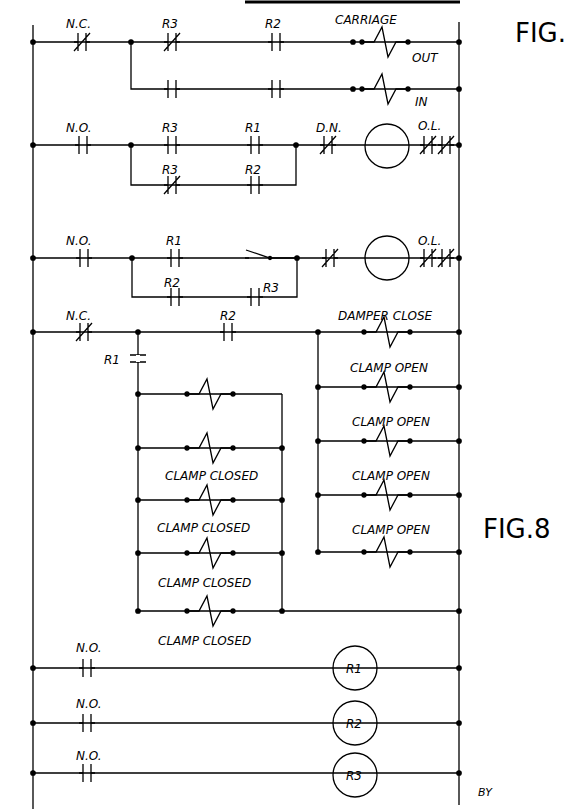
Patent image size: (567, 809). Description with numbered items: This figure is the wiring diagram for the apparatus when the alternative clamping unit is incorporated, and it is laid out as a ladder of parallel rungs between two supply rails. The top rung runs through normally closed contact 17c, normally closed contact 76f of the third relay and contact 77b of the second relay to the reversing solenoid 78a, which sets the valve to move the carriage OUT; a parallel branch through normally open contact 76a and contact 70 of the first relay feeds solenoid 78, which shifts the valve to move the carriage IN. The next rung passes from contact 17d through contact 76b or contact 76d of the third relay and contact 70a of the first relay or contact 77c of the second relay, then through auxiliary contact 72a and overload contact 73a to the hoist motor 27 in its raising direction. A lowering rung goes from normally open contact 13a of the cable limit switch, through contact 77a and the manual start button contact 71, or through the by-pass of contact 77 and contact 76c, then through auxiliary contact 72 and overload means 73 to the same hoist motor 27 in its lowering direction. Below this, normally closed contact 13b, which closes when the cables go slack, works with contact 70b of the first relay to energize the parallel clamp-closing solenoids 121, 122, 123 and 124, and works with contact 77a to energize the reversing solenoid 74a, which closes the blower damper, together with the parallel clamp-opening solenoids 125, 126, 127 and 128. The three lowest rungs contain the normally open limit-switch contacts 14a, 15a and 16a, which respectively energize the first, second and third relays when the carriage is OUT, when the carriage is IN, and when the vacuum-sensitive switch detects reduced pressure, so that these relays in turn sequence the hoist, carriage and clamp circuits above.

The normally closed contact 17c is at (82, 55).
The normally closed contact 76f is at (173, 55).
The contact 77b is at (276, 55).
The reversing solenoid 78a is at (385, 52).
The normally open contact 76a is at (173, 98).
The contact 70 is at (233, 247).
The solenoid 78 is at (385, 91).
The contact 17d is at (83, 151).
The normally closed contact 76b is at (186, 148).
The contact 76d is at (187, 190).
The contact 70a is at (268, 149).
The contact 77c is at (254, 193).
The auxiliary contact 72a is at (328, 155).
The hoist motor 27 is at (392, 233).
The auxiliary contact 73a is at (436, 156).
The normally open contact 13a is at (80, 270).
The contact 77a is at (206, 306).
The manually operated start button contact 71 is at (271, 247).
The contact 77 is at (173, 305).
The contact 76c is at (264, 306).
The auxiliary contact 72 is at (328, 269).
The overload means 73 is at (437, 270).
The normally closed contact 13b is at (78, 345).
The contact 70b is at (155, 359).
The reversing solenoid 74a is at (381, 340).
The solenoid 125 is at (380, 391).
The solenoid 126 is at (380, 444).
The solenoid 127 is at (380, 498).
The solenoid 128 is at (380, 555).
The solenoid 121 is at (205, 450).
The solenoid 122 is at (205, 502).
The solenoid 123 is at (205, 555).
The solenoid 124 is at (205, 614).
The normally open contact 14a is at (98, 675).
The normally open contact 15a is at (99, 730).
The normally open contact 16a is at (84, 783).